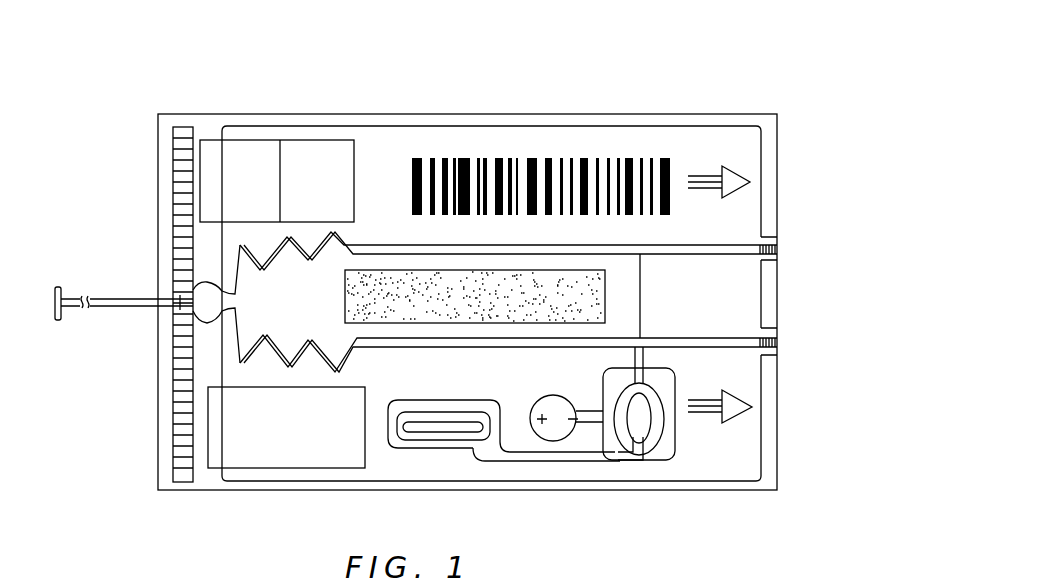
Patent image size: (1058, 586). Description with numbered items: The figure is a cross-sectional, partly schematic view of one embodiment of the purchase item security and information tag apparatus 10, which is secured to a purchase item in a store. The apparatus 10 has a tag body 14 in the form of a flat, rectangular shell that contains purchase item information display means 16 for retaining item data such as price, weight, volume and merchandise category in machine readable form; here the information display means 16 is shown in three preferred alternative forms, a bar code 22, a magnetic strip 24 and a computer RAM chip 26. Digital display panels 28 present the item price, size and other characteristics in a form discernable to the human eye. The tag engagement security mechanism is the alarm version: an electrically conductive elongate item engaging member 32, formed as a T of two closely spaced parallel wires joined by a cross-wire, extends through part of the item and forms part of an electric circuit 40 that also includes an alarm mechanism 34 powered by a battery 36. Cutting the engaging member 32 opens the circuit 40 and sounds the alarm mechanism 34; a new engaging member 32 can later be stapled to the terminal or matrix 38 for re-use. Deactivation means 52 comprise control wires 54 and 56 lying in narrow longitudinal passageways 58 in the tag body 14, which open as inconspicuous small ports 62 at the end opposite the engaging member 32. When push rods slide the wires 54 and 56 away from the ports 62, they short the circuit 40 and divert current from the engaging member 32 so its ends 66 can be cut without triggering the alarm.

The purchase item security and information tag apparatus 10 is at (557, 48).
The tag body 14 is at (510, 115).
The purchase item information display means 16 is at (345, 298).
The bar code 22 is at (560, 158).
The magnetic strip 24 is at (587, 270).
The computer RAM chip 26 is at (630, 462).
The digital display panels 28 is at (263, 140).
The elongate item engaging member 32 is at (73, 310).
The alarm mechanism 34 is at (428, 448).
The battery 36 is at (553, 441).
The terminal or matrix 38 is at (180, 338).
The electric circuit 40 is at (113, 298).
The deactivation means 52 is at (792, 207).
The control wire 54 is at (557, 245).
The control wire 56 is at (507, 348).
The longitudinal passageways 58 is at (670, 255).
The ports 62 is at (779, 238).
The ends of engaging member 66 is at (193, 296).